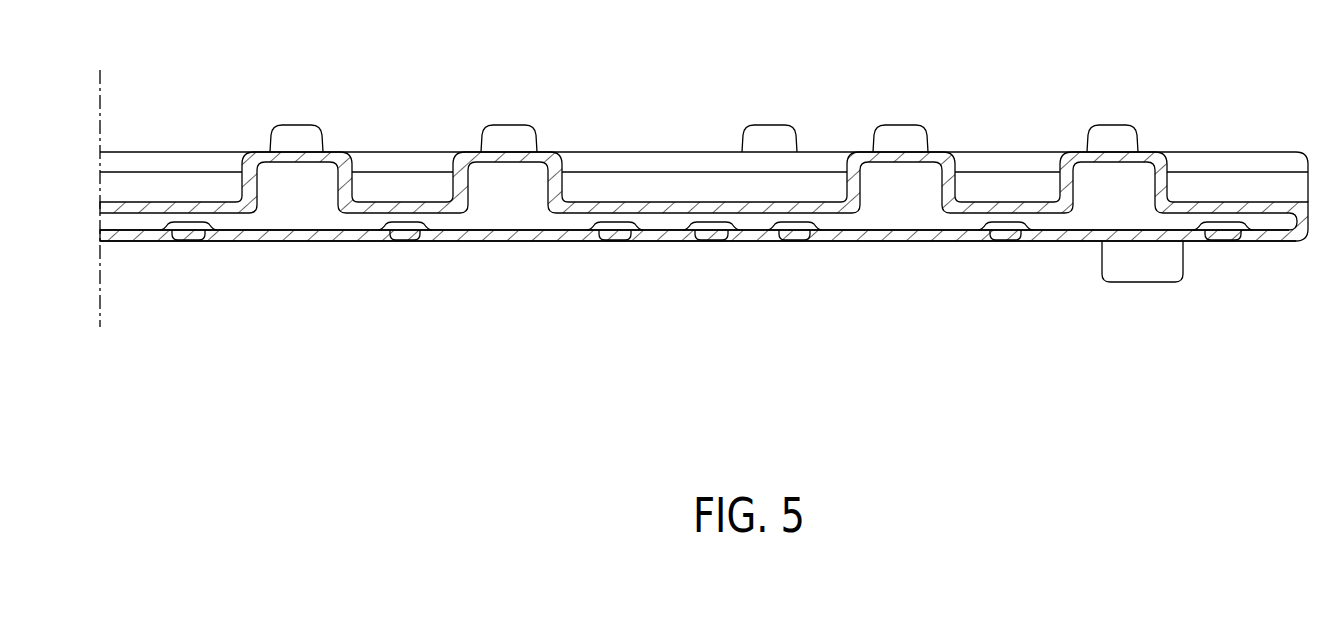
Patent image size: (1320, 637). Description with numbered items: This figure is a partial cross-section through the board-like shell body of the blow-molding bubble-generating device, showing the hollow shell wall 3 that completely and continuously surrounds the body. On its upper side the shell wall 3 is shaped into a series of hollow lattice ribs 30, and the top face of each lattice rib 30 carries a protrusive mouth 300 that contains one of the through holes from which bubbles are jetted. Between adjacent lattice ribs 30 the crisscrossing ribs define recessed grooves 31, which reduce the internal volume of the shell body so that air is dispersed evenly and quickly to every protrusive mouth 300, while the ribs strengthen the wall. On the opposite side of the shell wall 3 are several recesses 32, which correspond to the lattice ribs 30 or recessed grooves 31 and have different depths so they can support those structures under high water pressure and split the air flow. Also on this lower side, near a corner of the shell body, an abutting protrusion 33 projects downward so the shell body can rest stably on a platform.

The shell wall 3 is at (295, 234).
The lattice rib 30 is at (957, 188).
The protrusive mouth 300 is at (508, 140).
The recessed groove 31 is at (722, 183).
The recess 32 is at (703, 236).
The abutting protrusion 33 is at (1126, 267).